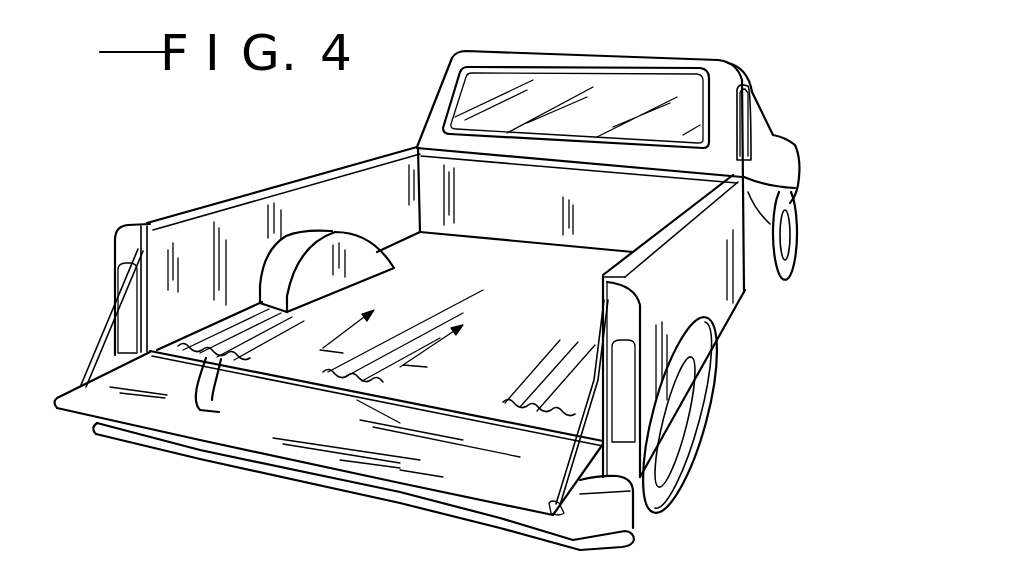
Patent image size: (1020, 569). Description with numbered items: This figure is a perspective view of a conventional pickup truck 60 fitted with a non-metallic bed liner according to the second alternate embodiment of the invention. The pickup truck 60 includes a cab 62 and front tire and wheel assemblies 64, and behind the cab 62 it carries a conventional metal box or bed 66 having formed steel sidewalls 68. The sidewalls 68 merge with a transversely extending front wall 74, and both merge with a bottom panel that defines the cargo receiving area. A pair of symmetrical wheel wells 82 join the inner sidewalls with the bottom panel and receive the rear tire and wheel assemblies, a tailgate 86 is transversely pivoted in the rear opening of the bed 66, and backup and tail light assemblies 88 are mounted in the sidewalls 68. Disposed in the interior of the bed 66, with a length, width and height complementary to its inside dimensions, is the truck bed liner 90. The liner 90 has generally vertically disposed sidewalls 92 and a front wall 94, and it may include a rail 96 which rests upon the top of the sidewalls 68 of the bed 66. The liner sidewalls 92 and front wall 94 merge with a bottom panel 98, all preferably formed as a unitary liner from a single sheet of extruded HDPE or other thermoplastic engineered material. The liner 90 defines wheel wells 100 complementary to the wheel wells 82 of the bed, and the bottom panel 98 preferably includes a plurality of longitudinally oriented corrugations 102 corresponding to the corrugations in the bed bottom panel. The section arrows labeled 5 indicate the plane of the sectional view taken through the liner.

The section line 5- 5 is at (403, 330).
The pickup truck 60 is at (806, 124).
The cab 62 is at (640, 50).
The front tire and wheel assemblies 64 is at (802, 252).
The metal box or bed 66 is at (755, 312).
The sidewalls 68 is at (797, 160).
The front wall 74 is at (432, 128).
The wheel wells 82 is at (305, 232).
The tailgate 86 is at (84, 412).
The backup and tail light assemblies 88 is at (116, 282).
The truck bed liner 90 is at (227, 192).
The sidewalls 92 is at (343, 187).
The front wall 94 is at (535, 212).
The rail 96 is at (684, 217).
The bottom panel 98 is at (558, 325).
The wheel wells 100 is at (379, 264).
The corrugations 102 is at (242, 393).